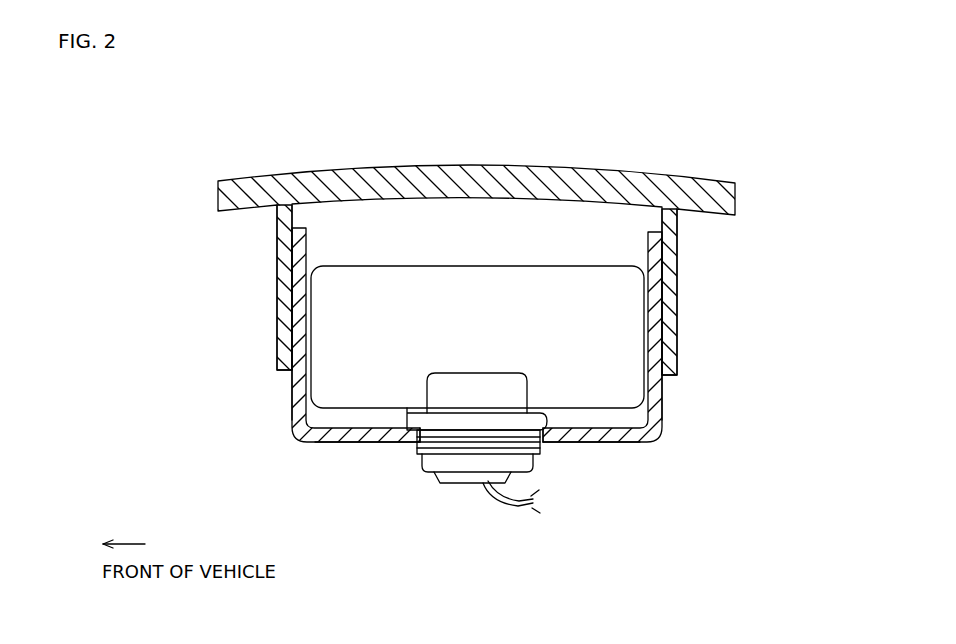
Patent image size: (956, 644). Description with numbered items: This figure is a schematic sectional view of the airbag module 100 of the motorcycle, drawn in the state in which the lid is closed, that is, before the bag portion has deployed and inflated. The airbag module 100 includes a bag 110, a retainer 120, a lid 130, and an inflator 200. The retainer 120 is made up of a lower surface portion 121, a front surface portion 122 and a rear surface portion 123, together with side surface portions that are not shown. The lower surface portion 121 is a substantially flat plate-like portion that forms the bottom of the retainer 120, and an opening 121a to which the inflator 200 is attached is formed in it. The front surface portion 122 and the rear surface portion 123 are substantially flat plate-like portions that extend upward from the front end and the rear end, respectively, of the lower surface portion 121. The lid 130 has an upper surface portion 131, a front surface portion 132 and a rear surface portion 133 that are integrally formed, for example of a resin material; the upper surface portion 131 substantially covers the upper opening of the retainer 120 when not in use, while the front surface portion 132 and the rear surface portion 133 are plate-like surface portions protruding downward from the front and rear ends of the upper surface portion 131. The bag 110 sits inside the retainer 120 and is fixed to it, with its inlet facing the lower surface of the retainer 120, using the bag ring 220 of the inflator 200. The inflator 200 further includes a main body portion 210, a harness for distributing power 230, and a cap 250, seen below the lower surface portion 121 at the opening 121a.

The airbag module 100 is at (170, 167).
The bag 110 is at (428, 322).
The retainer 120 is at (293, 443).
The lower surface portion 121 is at (350, 438).
The opening 121a is at (425, 437).
The front surface portion 122 is at (300, 360).
The rear surface portion 123 is at (652, 365).
The lid 130 is at (673, 166).
The upper surface portion 131 is at (492, 175).
The front surface portion 132 is at (283, 310).
The rear surface portion 133 is at (675, 308).
The inflator 200 is at (557, 465).
The main body portion 210 is at (520, 397).
The bag ring 220 is at (538, 422).
The harness for distributing power 230 is at (518, 505).
The cap 250 is at (458, 465).